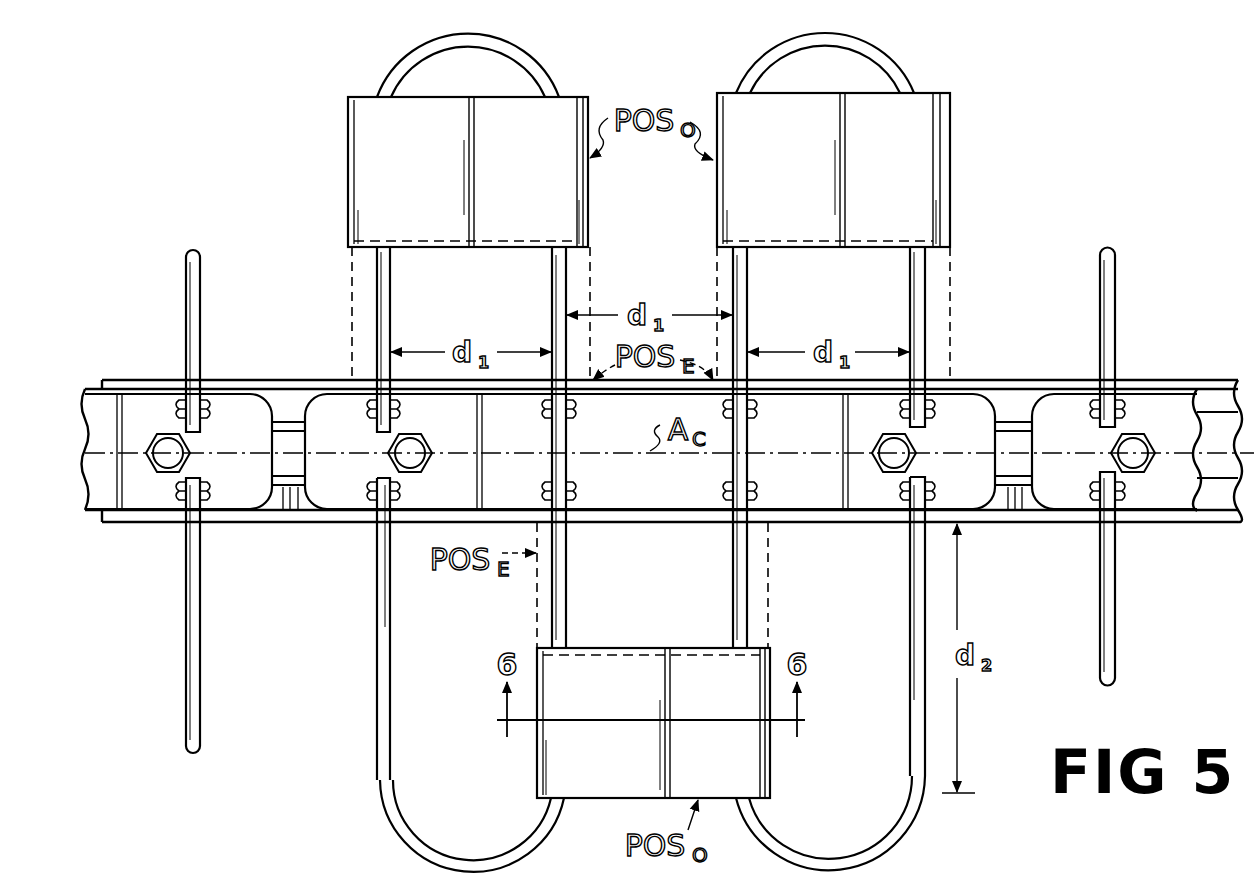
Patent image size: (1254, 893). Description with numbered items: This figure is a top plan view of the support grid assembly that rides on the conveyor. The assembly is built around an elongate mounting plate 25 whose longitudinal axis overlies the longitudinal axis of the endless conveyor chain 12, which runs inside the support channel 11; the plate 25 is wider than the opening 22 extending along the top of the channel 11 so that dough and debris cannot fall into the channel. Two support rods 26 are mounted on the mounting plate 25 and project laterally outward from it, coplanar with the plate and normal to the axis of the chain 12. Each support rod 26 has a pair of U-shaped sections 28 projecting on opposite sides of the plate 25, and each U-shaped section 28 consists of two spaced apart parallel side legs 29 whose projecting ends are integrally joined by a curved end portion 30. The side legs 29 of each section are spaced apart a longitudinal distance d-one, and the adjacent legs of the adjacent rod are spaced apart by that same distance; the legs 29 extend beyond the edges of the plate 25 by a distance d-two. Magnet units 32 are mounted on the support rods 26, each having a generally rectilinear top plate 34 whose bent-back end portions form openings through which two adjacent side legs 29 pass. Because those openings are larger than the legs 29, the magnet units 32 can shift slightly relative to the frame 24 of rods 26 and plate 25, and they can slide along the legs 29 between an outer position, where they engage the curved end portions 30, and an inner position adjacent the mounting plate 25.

The support channel 11 is at (1203, 386).
The endless conveyor chain 12 is at (1013, 420).
The opening 22 is at (291, 417).
The frame 24 is at (200, 392).
The mounting plate 25 is at (243, 505).
The support rod 26 is at (201, 268).
The U-shaped section 28 is at (378, 282).
The side leg 29 is at (390, 293).
The curved end portion 30 is at (400, 72).
The magnet unit 32 is at (347, 170).
The top plate 34 is at (583, 215).